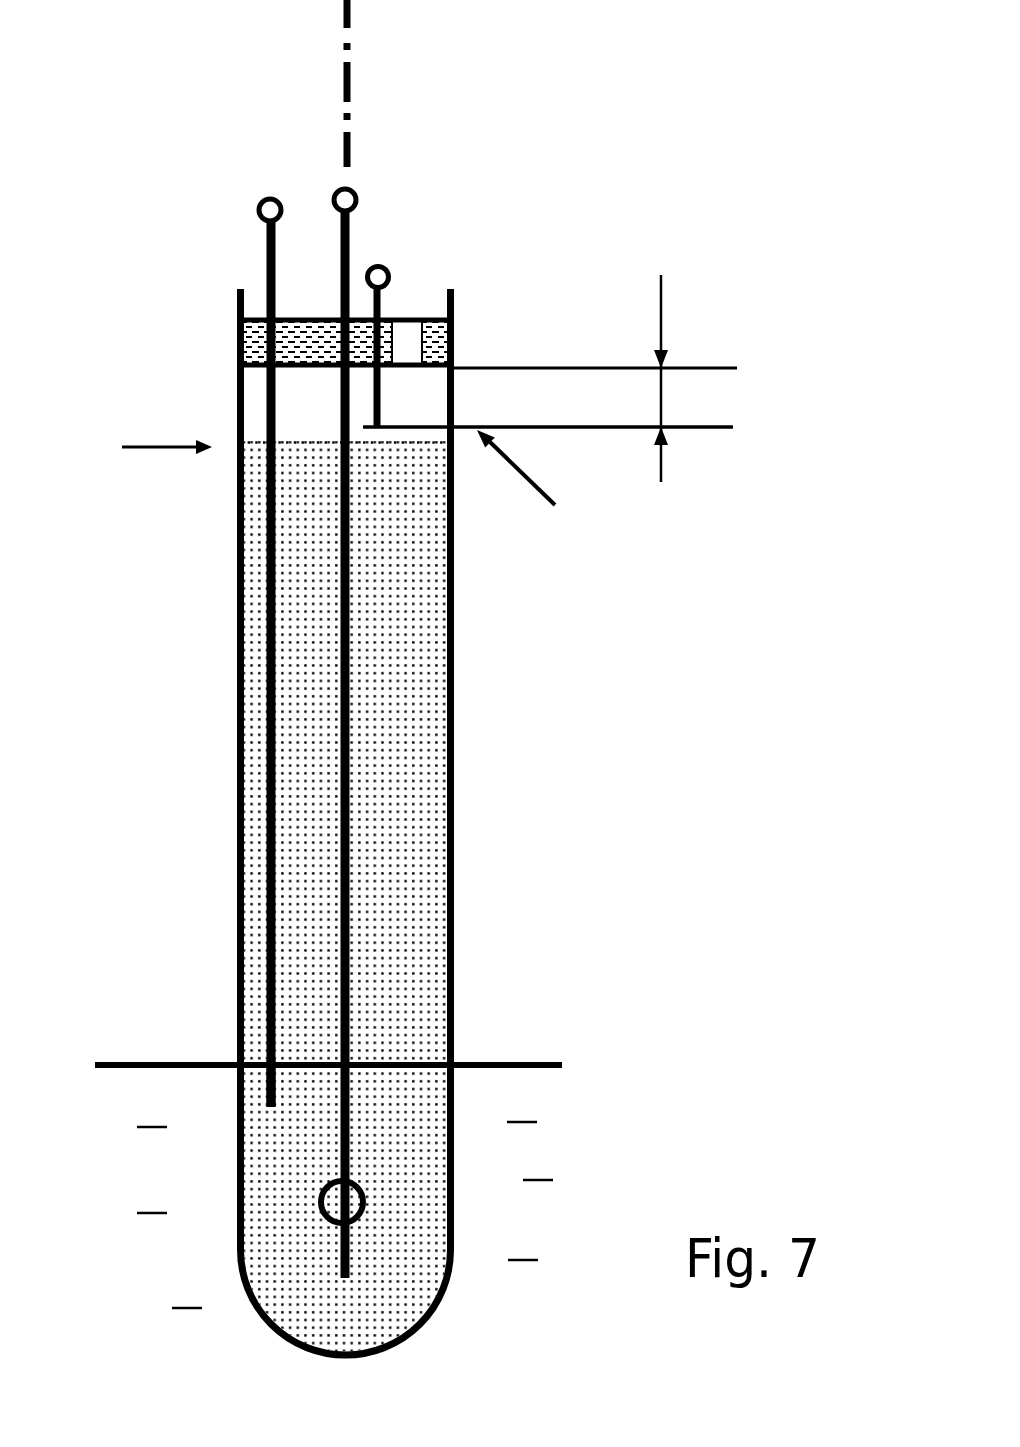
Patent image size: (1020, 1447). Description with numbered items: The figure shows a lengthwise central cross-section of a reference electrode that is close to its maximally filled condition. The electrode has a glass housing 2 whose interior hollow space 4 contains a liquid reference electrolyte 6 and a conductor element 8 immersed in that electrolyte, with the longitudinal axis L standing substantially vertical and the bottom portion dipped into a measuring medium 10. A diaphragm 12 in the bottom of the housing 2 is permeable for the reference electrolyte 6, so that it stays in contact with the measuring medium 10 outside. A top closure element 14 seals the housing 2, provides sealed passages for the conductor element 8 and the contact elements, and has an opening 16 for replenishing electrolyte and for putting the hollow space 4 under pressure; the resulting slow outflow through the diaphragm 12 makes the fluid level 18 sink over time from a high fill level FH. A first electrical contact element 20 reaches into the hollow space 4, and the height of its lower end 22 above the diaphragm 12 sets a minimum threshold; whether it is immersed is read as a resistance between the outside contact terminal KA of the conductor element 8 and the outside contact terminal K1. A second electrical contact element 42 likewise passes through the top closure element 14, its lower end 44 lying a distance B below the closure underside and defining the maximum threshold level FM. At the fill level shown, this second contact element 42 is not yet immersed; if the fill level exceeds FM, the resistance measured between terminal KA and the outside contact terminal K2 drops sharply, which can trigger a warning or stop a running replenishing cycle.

The glass housing 2 is at (237, 815).
The interior hollow space 4 is at (253, 385).
The reference electrolyte 6 is at (402, 697).
The conductor element 8 is at (350, 845).
The measuring medium 10 is at (492, 1087).
The diaphragm 12 is at (350, 1207).
The top closure element 14 is at (238, 322).
The opening 16 is at (407, 328).
The fluid level 18 is at (313, 440).
The first electrical contact element 20 is at (267, 632).
The lower end of the first contact element 22 is at (253, 1060).
The second electrical contact element 42 is at (380, 297).
The lower end of the second contact element 44 is at (395, 412).
The longitudinal axis L is at (350, 73).
The distance B is at (663, 402).
The outside contact terminal of the conductor element KA is at (333, 192).
The outside contact terminal of the first contact element K1 is at (257, 210).
The outside contact terminal of the second contact element K2 is at (383, 265).
The high fill level FH is at (137, 451).
The maximum threshold level FM is at (554, 490).